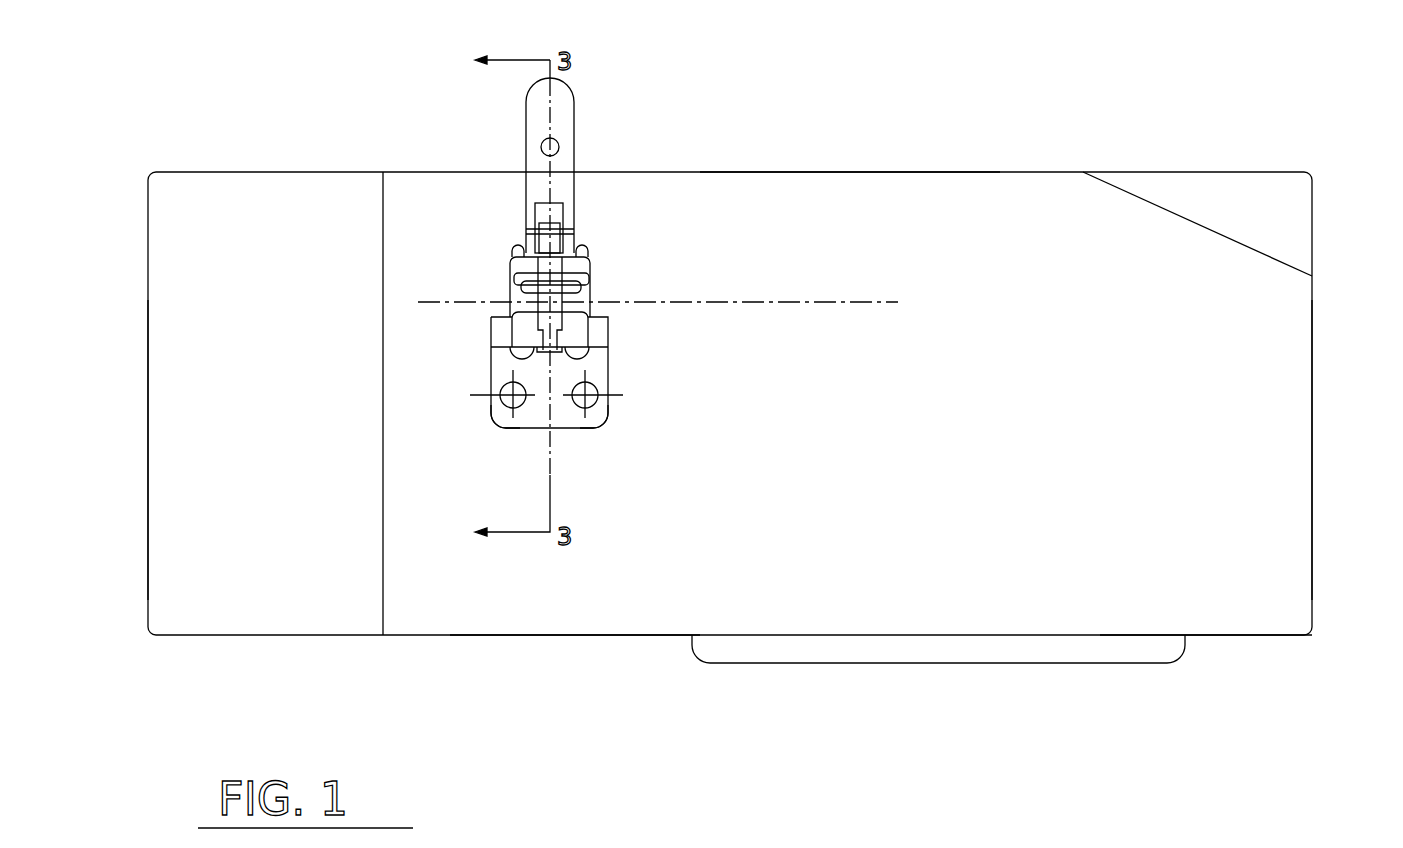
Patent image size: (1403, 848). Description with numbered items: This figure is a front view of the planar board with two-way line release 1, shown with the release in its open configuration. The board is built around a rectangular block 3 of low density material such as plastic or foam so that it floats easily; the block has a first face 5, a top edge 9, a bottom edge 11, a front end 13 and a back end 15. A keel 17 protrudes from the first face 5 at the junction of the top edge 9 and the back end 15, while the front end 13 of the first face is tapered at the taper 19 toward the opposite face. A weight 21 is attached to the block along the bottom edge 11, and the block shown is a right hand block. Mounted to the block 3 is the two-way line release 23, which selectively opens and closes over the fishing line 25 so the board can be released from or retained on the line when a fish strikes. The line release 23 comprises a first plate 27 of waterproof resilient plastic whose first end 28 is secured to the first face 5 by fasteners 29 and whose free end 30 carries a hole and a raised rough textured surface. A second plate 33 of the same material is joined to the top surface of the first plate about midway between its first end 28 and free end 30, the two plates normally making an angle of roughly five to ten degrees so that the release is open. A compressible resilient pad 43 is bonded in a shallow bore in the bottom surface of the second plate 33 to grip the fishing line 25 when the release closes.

The planar board with two-way line release 1 is at (455, 642).
The rectangular block 3 is at (1254, 642).
The first face 5 is at (1226, 500).
The top edge 9 is at (858, 172).
The bottom edge 11 is at (592, 637).
The front end 13 is at (148, 537).
The back end 15 is at (1312, 412).
The keel 17 is at (1287, 218).
The taper 19 is at (265, 584).
The weight 21 is at (920, 657).
The two-way line release 23 is at (582, 123).
The fishing line 25 is at (860, 304).
The first plate 27 is at (486, 425).
The first end 28 is at (608, 420).
The fasteners 29 is at (512, 397).
The free end 30 is at (512, 330).
The second plate 33 is at (586, 240).
The pad 43 is at (514, 290).